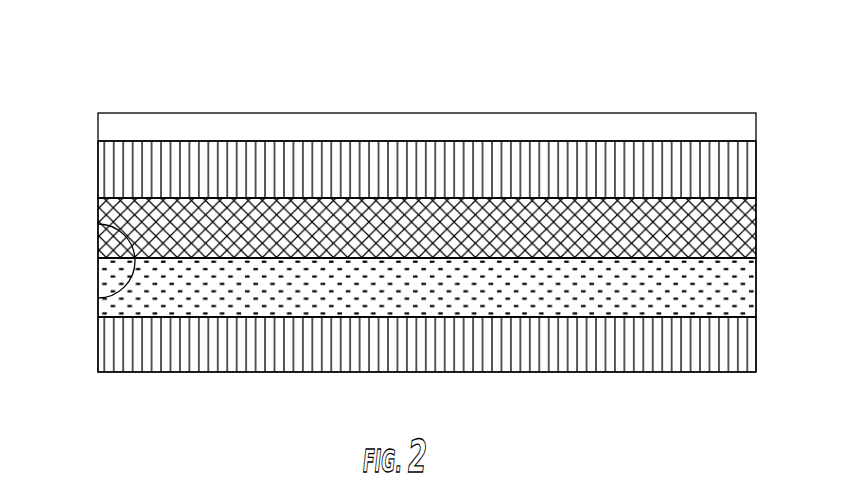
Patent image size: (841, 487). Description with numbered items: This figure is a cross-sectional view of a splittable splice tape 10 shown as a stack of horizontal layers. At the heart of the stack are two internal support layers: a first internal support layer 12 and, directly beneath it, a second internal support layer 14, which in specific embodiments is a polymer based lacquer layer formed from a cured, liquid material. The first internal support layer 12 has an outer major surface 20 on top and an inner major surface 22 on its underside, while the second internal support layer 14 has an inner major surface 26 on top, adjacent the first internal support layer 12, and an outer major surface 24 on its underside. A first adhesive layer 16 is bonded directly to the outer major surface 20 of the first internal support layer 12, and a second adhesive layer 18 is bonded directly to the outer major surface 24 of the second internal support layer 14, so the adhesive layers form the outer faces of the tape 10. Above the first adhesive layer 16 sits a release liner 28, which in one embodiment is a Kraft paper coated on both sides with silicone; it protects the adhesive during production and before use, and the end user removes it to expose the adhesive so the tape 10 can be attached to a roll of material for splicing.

The tape 10 is at (78, 110).
The first internal support layer 12 is at (110, 213).
The second internal support layer 14 is at (105, 307).
The first adhesive layer 16 is at (108, 164).
The second adhesive layer 18 is at (108, 352).
The outer major surface 20 is at (181, 210).
The inner major surface 22 is at (207, 250).
The outer major surface 24 is at (262, 308).
The inner major surface 26 is at (313, 270).
The release liner 28 is at (748, 128).